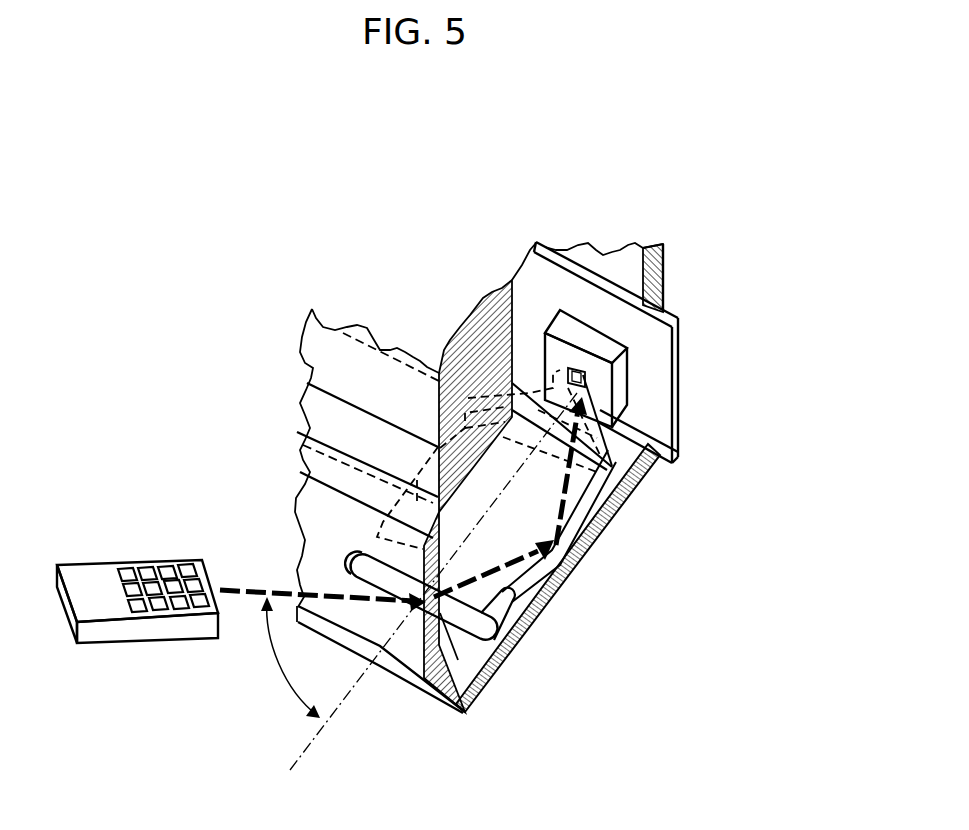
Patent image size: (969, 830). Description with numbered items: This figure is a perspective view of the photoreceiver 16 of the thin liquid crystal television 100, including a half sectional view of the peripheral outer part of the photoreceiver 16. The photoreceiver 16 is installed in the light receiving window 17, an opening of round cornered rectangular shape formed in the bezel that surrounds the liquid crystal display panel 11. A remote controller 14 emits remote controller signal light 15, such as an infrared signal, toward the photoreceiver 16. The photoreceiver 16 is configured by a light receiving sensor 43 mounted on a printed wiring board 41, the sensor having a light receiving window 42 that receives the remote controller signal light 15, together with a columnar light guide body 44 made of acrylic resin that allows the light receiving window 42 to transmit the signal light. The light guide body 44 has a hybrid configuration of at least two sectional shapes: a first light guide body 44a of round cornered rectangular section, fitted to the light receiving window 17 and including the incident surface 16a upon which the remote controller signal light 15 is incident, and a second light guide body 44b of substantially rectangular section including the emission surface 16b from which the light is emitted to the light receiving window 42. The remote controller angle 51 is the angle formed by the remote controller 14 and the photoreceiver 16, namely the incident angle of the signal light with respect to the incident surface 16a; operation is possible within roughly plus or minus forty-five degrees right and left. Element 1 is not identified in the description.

The thin liquid crystal television 100 is at (470, 258).
The liquid crystal display panel 11 is at (342, 358).
The device body 1 is at (333, 528).
The remote controller 14 is at (103, 578).
The light receiving window 17 is at (357, 560).
The remote controller signal light 15 is at (240, 598).
The remote controller angle 51 is at (418, 581).
The photoreceiver 16 is at (852, 383).
The incident surface 16a is at (465, 713).
The emission surface 16b is at (575, 372).
The printed wiring board 41 is at (643, 362).
The light receiving window 42 is at (612, 412).
The light receiving sensor 43 is at (620, 375).
The light guide body 44 is at (563, 587).
The first light guide body 44a is at (495, 608).
The second light guide body 44b is at (577, 517).